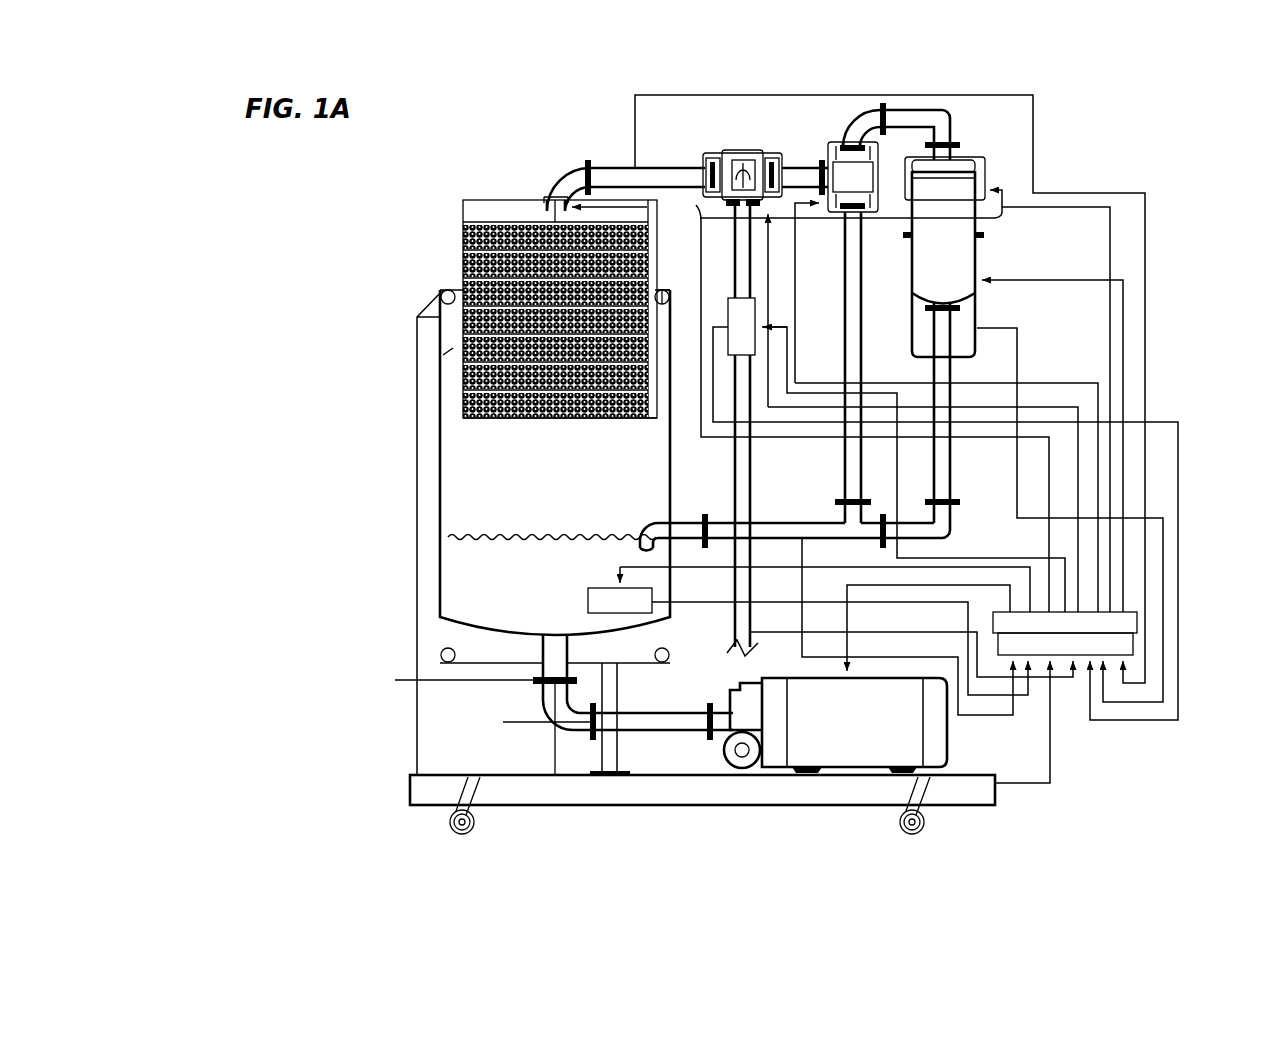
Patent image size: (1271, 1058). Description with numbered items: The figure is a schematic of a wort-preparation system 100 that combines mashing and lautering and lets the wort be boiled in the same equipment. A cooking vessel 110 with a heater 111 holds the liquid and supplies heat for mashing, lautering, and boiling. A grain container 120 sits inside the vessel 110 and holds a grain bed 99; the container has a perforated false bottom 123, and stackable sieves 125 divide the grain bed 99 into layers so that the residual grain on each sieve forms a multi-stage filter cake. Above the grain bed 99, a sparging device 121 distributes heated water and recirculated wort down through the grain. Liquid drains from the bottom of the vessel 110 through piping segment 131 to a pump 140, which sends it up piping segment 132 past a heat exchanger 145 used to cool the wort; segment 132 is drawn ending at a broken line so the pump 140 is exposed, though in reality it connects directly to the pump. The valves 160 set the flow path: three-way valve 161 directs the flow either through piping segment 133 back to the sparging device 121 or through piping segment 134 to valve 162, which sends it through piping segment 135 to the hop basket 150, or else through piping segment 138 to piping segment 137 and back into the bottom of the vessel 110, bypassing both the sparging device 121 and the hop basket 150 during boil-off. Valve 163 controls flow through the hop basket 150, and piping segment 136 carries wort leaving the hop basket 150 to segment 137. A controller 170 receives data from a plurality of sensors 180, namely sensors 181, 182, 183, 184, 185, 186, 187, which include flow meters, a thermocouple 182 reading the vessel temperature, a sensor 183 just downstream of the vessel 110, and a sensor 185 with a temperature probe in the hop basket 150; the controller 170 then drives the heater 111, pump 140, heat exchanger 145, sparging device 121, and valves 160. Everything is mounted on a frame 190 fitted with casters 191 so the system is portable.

The wort-preparation system 100 is at (1160, 119).
The grain bed 99 is at (663, 318).
The cooking vessel 110 is at (672, 491).
The heater 111 is at (588, 598).
The grain container 120 is at (463, 203).
The sparging device 121 is at (549, 194).
The false bottom 123 is at (526, 418).
The sieves 125 is at (456, 235).
The piping segment 131 is at (555, 722).
The piping segment 132 is at (750, 458).
The piping segment 133 is at (648, 168).
The piping segment 134 is at (785, 168).
The piping segment 135 is at (898, 110).
The piping segment 136 is at (951, 468).
The piping segment 137 is at (778, 523).
The piping segment 138 is at (862, 363).
The pump 140 is at (947, 738).
The heat exchanger 145 is at (728, 306).
The hop basket 150 is at (978, 258).
The valves 160 is at (845, 222).
The three-way valve 161 is at (742, 153).
The valve 162 is at (865, 194).
The valve 163 is at (986, 172).
The controller 170 is at (1137, 622).
The sensors 180 is at (1185, 668).
The sensor 181 is at (803, 558).
The sensor 182 is at (762, 602).
The sensor 183 is at (998, 783).
The sensor 184 is at (900, 632).
The sensor 185 is at (1017, 363).
The sensor 186 is at (1033, 161).
The sensor 187 is at (1178, 493).
The frame 190 is at (410, 786).
The casters 191 is at (475, 822).